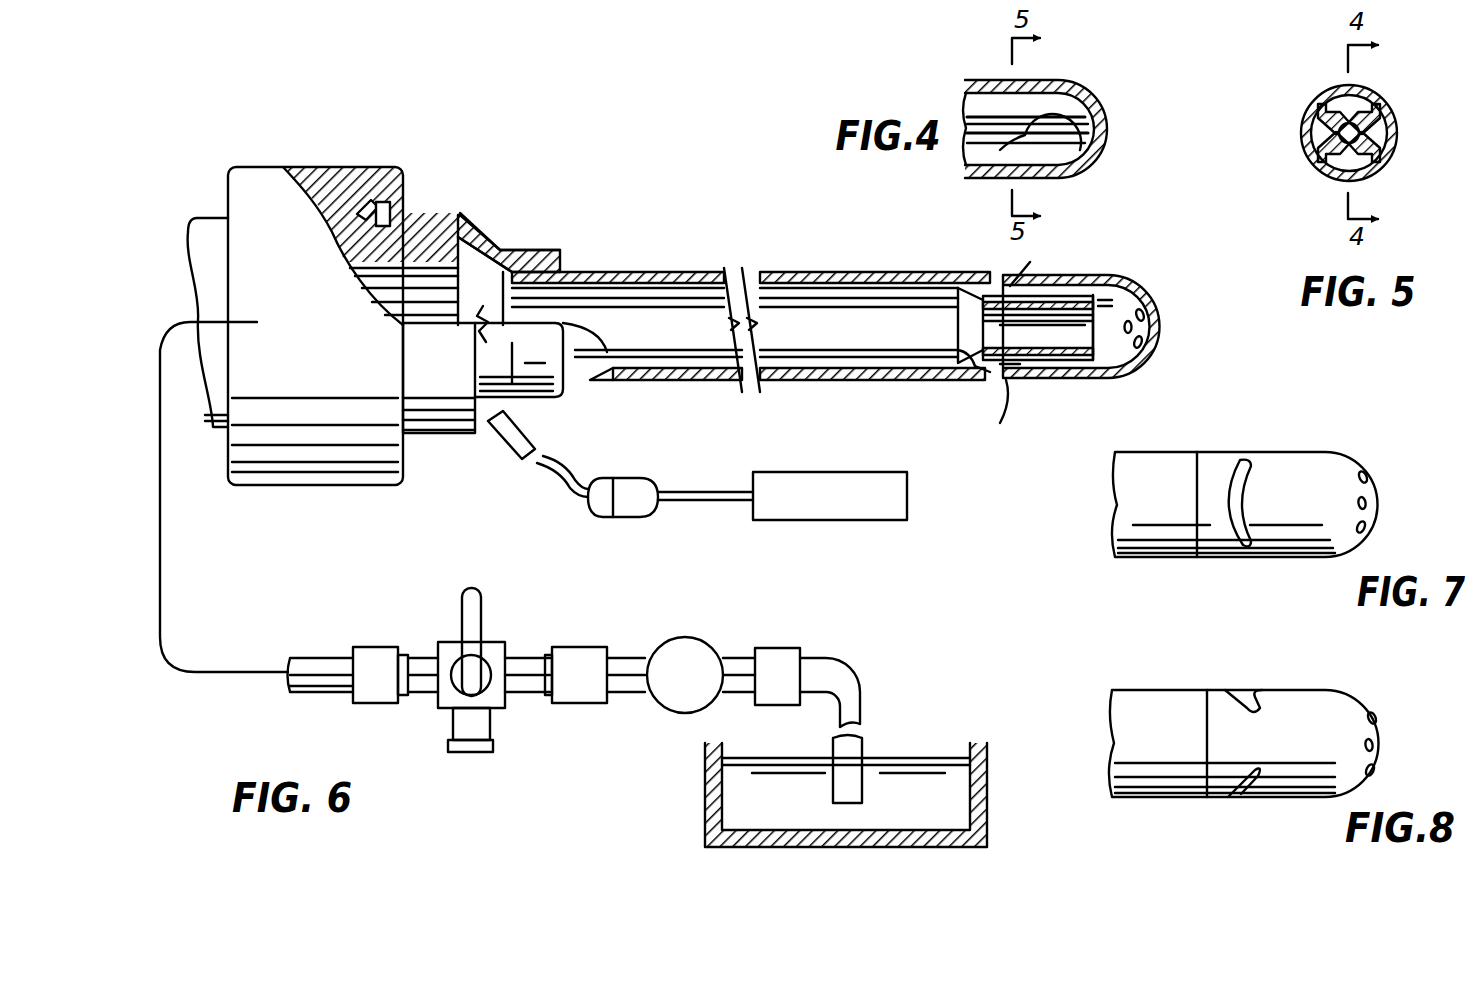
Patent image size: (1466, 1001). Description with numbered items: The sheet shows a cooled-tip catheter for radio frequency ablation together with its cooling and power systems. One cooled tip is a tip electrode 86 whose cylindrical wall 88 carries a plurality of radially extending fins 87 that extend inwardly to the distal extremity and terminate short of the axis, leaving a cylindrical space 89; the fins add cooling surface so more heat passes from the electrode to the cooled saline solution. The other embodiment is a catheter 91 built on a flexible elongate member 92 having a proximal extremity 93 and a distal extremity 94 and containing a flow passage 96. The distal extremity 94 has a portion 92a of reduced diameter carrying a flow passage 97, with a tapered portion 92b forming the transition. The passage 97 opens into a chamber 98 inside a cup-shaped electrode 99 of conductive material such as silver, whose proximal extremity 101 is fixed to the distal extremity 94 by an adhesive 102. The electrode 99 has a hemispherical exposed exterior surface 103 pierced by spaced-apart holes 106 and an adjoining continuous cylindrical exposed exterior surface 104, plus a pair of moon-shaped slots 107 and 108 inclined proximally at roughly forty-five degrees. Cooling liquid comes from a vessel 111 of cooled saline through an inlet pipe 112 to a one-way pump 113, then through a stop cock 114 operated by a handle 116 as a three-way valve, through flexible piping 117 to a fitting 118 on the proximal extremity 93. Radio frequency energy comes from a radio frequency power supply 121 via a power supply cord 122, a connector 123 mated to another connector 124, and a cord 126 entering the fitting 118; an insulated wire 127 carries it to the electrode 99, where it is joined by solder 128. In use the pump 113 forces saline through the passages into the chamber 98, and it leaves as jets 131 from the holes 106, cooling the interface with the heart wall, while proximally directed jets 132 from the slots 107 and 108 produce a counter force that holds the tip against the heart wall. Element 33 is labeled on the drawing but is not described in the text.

In FIG. 7, the electrode 33 is at (1290, 462).
In FIG. 4, the tip electrode 86 is at (1062, 76).
In FIG. 4, the radially extending fins 87 is at (1008, 95).
In FIG. 5, the radially extending fins 87 is at (1346, 96).
In FIG. 5, the cylindrical wall 88 is at (1322, 98).
In FIG. 4, the cylindrical space 89 is at (1075, 142).
In FIG. 5, the cylindrical space 89 is at (1322, 166).
In FIG. 6, the catheter 91 is at (659, 272).
In FIG. 6, the flexible elongate member 92 is at (709, 272).
In FIG. 6, the portion of reduced diameter 92a is at (1020, 382).
In FIG. 6, the tapered portion 92b is at (982, 290).
In FIG. 6, the proximal extremity 93 is at (560, 268).
In FIG. 6, the distal extremity 94 is at (919, 280).
In FIG. 6, the flow passage 96 is at (604, 272).
In FIG. 6, the flow passage 97 is at (1106, 290).
In FIG. 6, the chamber 98 is at (1131, 372).
In FIG. 6, the cup-shaped electrode 99 is at (1146, 284).
In FIG. 6, the proximal extremity 101 is at (990, 386).
In FIG. 6, the adhesive 102 is at (986, 285).
In FIG. 6, the hemispherical exposed exterior surface 103 is at (1163, 380).
In FIG. 7, the hemispherical exposed exterior surface 103 is at (1368, 506).
In FIG. 8, the hemispherical exposed exterior surface 103 is at (1376, 752).
In FIG. 6, the cylindrical exposed exterior surface 104 is at (1113, 384).
In FIG. 7, the cylindrical exposed exterior surface 104 is at (1284, 546).
In FIG. 8, the cylindrical exposed exterior surface 104 is at (1293, 692).
In FIG. 6, the spaced-apart holes 106 is at (1166, 322).
In FIG. 7, the spaced-apart holes 106 is at (1364, 482).
In FIG. 8, the spaced-apart holes 106 is at (1374, 720).
In FIG. 6, the moon-shaped slot 107 is at (1052, 300).
In FIG. 7, the moon-shaped slot 107 is at (1238, 462).
In FIG. 8, the moon-shaped slot 107 is at (1246, 692).
In FIG. 6, the moon-shaped slot 108 is at (1036, 372).
In FIG. 8, the moon-shaped slot 108 is at (1230, 797).
In FIG. 6, the vessel 111 is at (705, 802).
In FIG. 6, the inlet pipe 112 is at (847, 682).
In FIG. 6, the pump 113 is at (658, 644).
In FIG. 6, the stop cock 114 is at (499, 645).
In FIG. 6, the handle 116 is at (462, 617).
In FIG. 6, the flexible piping 117 is at (215, 432).
In FIG. 6, the fitting 118 is at (286, 378).
In FIG. 6, the radio frequency power supply 121 is at (797, 472).
In FIG. 6, the power supply cord 122 is at (700, 490).
In FIG. 6, the connector 123 is at (650, 480).
In FIG. 6, the connector 124 is at (603, 480).
In FIG. 6, the cord 126 is at (537, 470).
In FIG. 6, the insulated wire 127 is at (856, 352).
In FIG. 6, the solder 128 is at (985, 376).
In FIG. 6, the jets 131 is at (1168, 300).
In FIG. 6, the jets 132 is at (1020, 342).